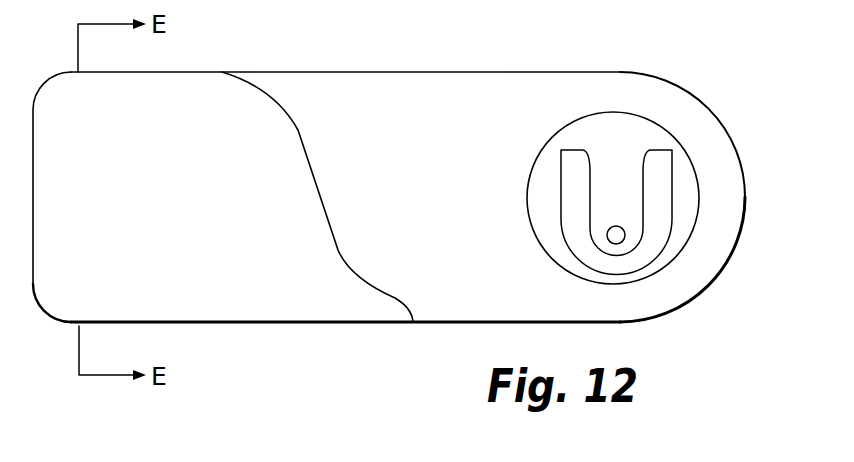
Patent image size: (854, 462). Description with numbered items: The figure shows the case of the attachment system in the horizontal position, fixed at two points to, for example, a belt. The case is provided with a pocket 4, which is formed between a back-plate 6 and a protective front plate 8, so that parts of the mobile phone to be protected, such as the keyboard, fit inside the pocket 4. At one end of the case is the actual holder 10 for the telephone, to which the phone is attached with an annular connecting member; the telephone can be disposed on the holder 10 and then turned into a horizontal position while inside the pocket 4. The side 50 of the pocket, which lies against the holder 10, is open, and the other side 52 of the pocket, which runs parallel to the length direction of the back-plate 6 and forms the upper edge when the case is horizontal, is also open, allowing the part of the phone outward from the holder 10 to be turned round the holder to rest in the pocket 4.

The pocket 4 is at (315, 116).
The back-plate 6 is at (407, 236).
The protective front plate 8 is at (216, 198).
The holder 10 is at (670, 117).
The side of the pocket 50 is at (323, 202).
The other side of the pocket 52 is at (203, 72).